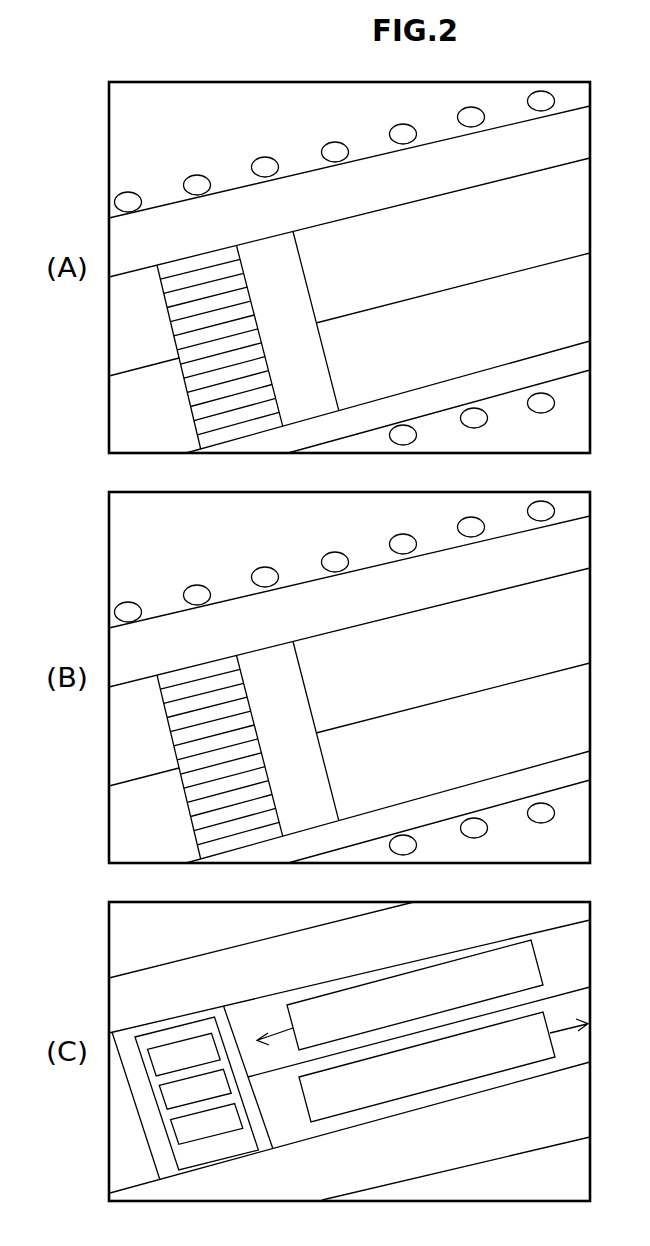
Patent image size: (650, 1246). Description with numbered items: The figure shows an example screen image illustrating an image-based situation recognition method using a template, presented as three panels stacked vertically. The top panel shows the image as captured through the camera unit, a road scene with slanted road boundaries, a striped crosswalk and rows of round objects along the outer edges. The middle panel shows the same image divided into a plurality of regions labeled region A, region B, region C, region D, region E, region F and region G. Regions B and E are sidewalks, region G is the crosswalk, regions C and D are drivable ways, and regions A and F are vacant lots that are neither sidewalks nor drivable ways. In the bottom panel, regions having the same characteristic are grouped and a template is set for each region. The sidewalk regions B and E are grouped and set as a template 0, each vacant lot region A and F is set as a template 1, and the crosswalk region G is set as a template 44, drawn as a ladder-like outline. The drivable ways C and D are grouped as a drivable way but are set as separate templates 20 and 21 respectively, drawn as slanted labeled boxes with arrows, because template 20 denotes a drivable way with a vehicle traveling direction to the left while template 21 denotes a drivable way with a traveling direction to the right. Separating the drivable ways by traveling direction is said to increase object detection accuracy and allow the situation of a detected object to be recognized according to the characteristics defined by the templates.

The region A is at (349, 564).
The region B is at (349, 624).
The region C is at (349, 715).
The region D is at (388, 795).
The region E is at (439, 818).
The region F is at (472, 829).
The region G is at (248, 751).
The template [1] 1 is at (338, 1042).
The template [0] 0 is at (349, 1060).
The template [20] 20 is at (400, 995).
The template [21] 21 is at (443, 1067).
The template [44] 44 is at (196, 1093).